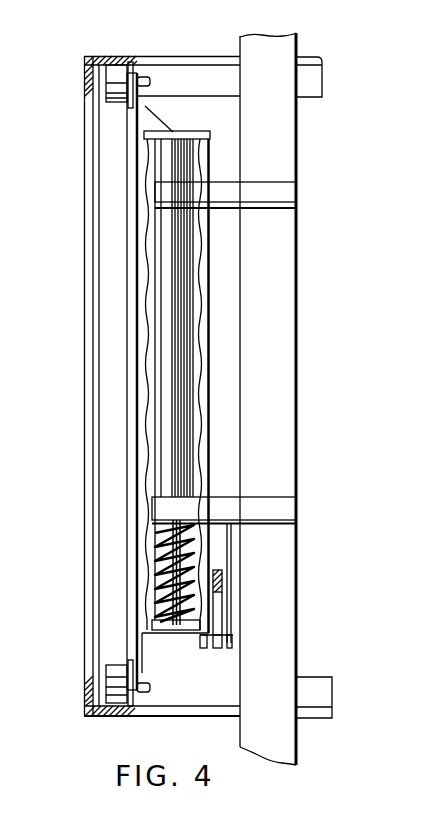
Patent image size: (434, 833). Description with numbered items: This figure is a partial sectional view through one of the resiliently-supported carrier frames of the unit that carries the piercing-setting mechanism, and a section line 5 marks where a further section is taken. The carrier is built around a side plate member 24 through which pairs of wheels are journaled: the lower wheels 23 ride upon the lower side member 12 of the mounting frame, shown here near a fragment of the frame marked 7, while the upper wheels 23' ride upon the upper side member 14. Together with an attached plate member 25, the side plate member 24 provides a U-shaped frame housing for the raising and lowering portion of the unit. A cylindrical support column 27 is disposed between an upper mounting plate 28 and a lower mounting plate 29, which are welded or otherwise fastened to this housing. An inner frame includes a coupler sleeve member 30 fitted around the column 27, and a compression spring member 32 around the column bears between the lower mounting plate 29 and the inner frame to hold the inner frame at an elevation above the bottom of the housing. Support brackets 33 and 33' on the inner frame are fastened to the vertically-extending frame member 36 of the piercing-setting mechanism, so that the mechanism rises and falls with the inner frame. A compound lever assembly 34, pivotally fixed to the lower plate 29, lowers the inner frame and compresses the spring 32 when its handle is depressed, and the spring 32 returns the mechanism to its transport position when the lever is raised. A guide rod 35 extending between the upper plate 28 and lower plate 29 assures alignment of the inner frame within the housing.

The upper side member 14 is at (84, 56).
The lower side member 12 is at (84, 715).
The frame member 7 is at (5, 725).
The side plate member 24 is at (136, 647).
The upper wheels 23' is at (143, 60).
The lower wheels 23 is at (128, 708).
The frame member 36 is at (298, 238).
The plate member 25 is at (210, 337).
The coupler sleeve member 30 is at (195, 283).
The upper mounting plate 28 is at (177, 132).
The cylindrical support column 27 is at (184, 147).
The support brackets 33' is at (248, 194).
The support brackets 33 is at (241, 510).
The guide rod 35 is at (180, 548).
The compression spring member 32 is at (163, 578).
The lower mounting plate 29 is at (167, 635).
The compound lever assembly 34 is at (230, 598).
The section line 5- 5 is at (63, 407).